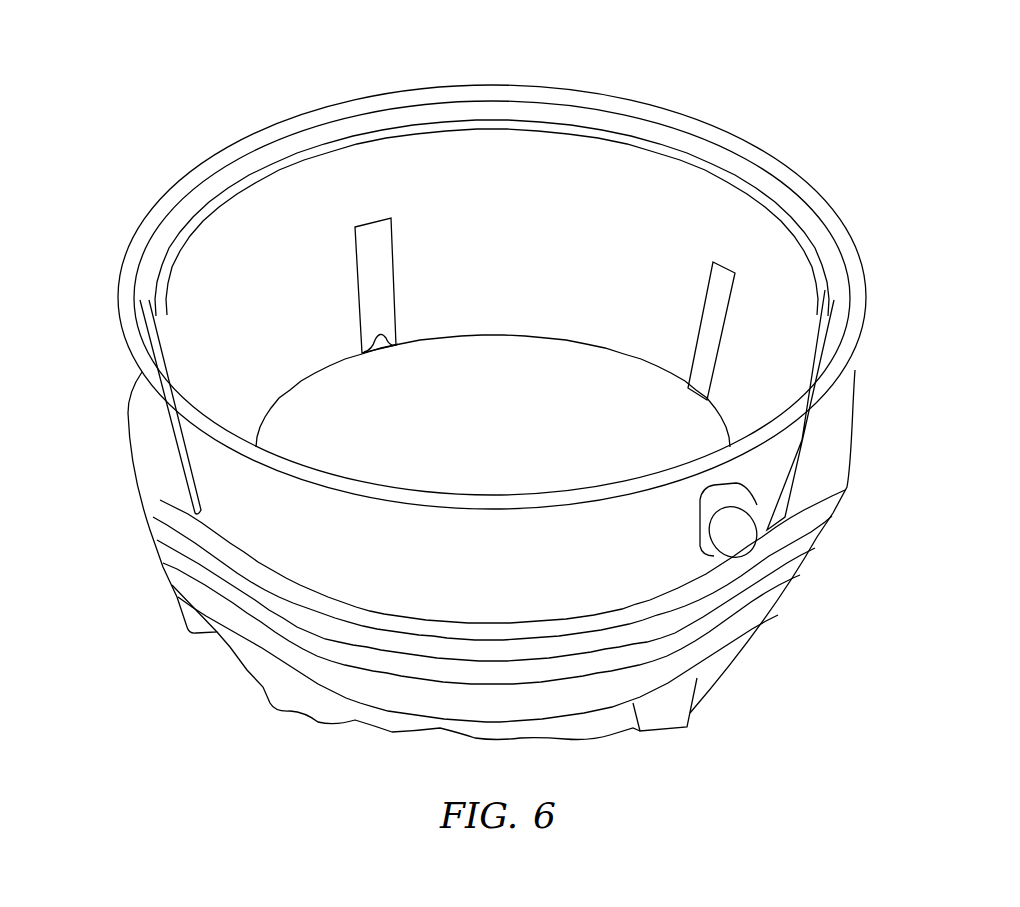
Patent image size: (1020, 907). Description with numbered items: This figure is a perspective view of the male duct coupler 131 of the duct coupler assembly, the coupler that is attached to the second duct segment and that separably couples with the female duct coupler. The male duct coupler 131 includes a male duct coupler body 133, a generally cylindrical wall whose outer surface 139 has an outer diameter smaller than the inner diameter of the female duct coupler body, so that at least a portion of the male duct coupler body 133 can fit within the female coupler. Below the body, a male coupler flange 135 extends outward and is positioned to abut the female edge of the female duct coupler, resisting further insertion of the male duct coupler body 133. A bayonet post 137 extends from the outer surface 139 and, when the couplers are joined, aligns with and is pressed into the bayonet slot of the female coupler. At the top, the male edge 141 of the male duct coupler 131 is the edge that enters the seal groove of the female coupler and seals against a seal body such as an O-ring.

The male duct coupler 131 is at (151, 119).
The male duct coupler body 133 is at (158, 422).
The male coupler flange 135 is at (178, 512).
The bayonet post 137 is at (733, 533).
The outer surface 139 is at (812, 424).
The male edge 141 is at (752, 150).